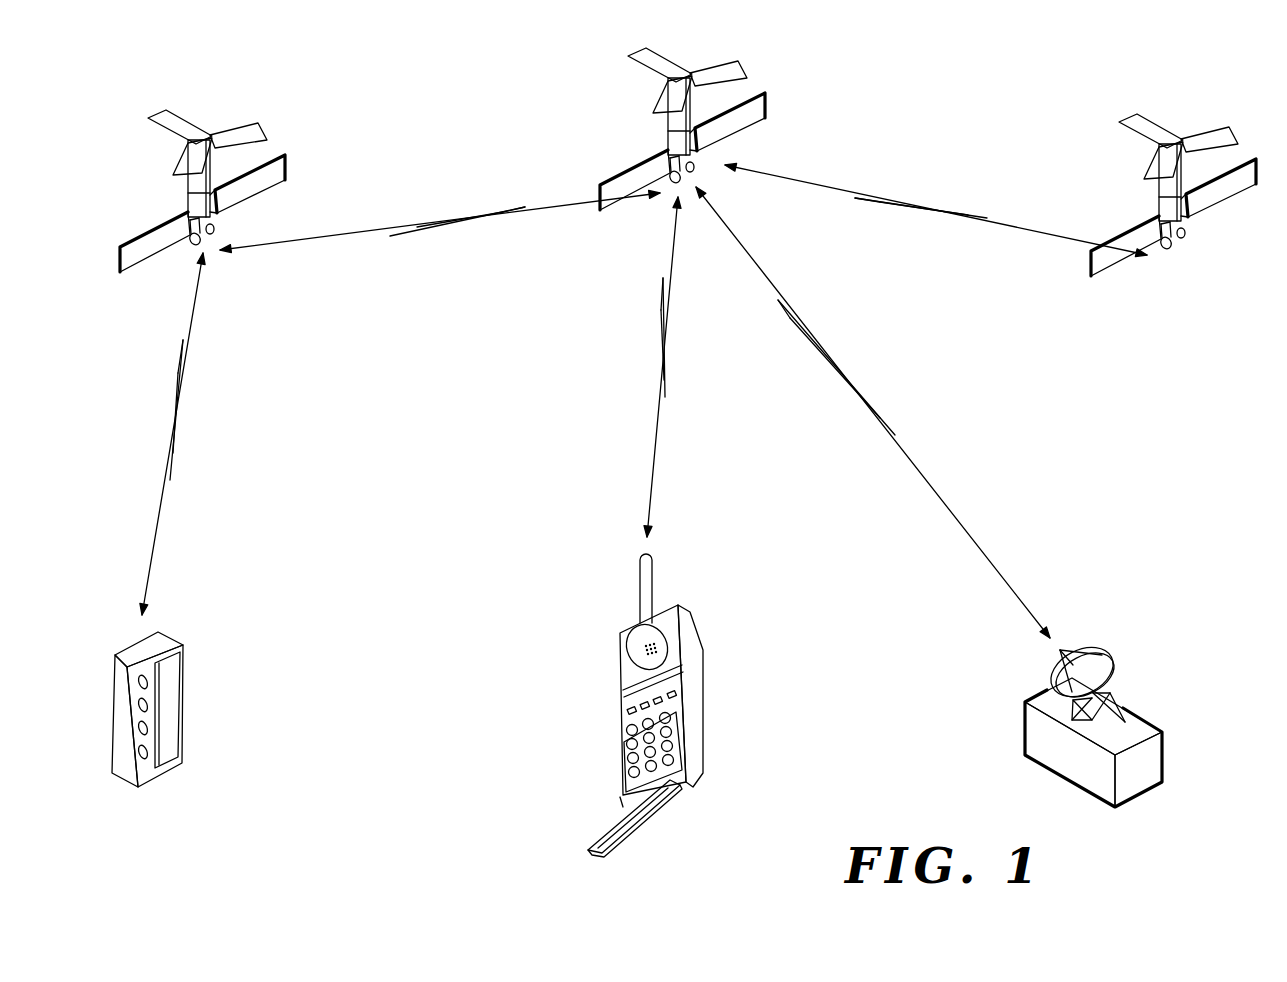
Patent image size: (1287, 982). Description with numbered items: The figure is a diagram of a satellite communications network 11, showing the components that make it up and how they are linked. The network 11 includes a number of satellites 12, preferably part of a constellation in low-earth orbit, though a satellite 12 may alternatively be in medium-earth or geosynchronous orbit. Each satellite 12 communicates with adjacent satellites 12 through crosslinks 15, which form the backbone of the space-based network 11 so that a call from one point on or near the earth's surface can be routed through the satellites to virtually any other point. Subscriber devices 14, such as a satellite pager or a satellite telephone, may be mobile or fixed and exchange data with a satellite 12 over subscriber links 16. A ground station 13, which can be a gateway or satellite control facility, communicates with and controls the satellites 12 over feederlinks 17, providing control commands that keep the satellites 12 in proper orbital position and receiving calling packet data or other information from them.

The satellite communications network 11 is at (929, 817).
The satellite 12 is at (150, 254).
The ground station 13 is at (1145, 753).
The subscriber device 14 is at (180, 660).
The crosslink 15 is at (445, 227).
The subscriber link 16 is at (183, 397).
The feederlink 17 is at (856, 386).